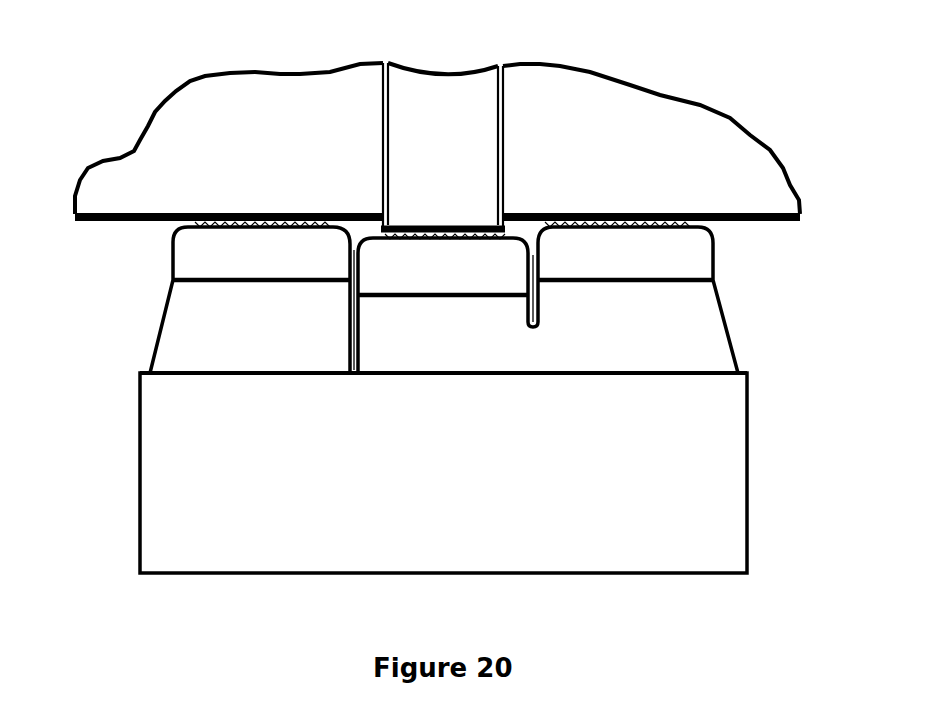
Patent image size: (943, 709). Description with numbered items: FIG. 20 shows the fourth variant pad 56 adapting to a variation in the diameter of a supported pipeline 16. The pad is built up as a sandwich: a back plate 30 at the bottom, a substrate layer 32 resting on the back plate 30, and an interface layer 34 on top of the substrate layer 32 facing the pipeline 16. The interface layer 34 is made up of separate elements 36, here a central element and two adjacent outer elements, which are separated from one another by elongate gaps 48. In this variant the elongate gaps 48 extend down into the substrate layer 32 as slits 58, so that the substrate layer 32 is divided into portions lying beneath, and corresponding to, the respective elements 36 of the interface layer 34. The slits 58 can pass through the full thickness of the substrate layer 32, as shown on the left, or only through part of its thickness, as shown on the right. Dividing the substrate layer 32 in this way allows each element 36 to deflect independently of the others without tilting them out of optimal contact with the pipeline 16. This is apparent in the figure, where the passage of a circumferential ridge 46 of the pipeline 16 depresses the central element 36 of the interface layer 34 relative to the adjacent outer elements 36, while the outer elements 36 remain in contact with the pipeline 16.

The pipeline 16 is at (168, 128).
The circumferential ridge 46 is at (430, 98).
The elongate gaps 48 is at (345, 252).
The elements 36 is at (227, 258).
The slits 58 is at (350, 312).
The interface layer 34 is at (718, 257).
The substrate layer 32 is at (714, 353).
The back plate 30 is at (720, 472).
The fourth variant pad 56 is at (117, 337).